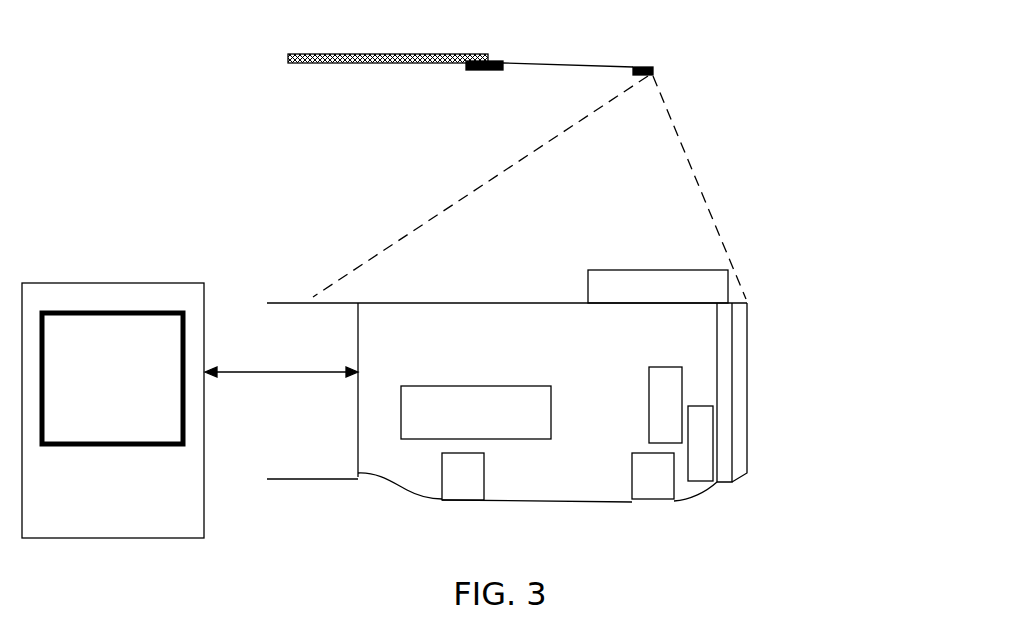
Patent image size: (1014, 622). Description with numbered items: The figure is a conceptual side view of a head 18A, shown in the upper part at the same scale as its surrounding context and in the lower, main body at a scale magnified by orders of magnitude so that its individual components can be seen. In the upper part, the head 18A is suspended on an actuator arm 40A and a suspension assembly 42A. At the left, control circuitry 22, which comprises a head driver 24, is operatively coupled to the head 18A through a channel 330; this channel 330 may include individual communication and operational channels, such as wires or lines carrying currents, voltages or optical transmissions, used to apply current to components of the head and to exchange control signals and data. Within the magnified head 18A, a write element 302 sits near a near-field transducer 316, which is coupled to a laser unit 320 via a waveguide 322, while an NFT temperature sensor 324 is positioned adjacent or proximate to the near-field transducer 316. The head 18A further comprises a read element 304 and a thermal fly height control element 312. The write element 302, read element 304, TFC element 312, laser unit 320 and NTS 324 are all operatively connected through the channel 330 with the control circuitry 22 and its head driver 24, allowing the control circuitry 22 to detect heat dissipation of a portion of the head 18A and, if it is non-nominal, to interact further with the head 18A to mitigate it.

The actuator arm 40A is at (389, 53).
The suspension assembly 42A is at (571, 58).
The head 18A is at (662, 79).
The control circuitry 22 is at (113, 410).
The head driver 24 is at (112, 378).
The channel 330 is at (245, 370).
The laser unit 320 is at (588, 288).
The thermal fly height control element 312 is at (401, 405).
The NFT temperature sensor 324 is at (649, 402).
The near-field transducer 316 is at (693, 405).
The waveguide 322 is at (735, 395).
The read element 304 is at (443, 475).
The write element 302 is at (674, 478).